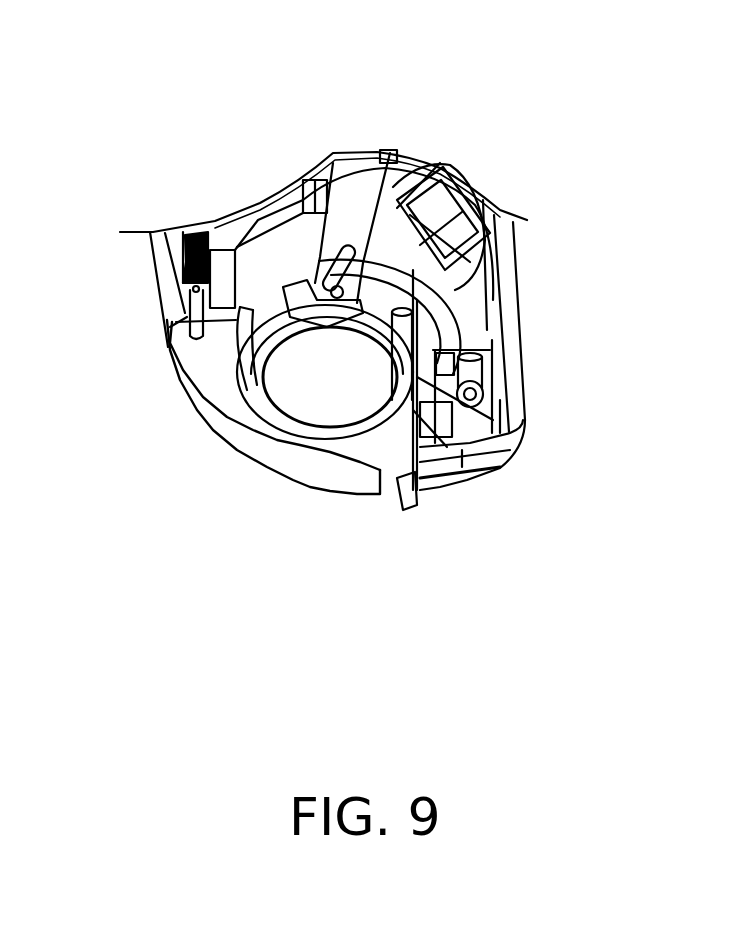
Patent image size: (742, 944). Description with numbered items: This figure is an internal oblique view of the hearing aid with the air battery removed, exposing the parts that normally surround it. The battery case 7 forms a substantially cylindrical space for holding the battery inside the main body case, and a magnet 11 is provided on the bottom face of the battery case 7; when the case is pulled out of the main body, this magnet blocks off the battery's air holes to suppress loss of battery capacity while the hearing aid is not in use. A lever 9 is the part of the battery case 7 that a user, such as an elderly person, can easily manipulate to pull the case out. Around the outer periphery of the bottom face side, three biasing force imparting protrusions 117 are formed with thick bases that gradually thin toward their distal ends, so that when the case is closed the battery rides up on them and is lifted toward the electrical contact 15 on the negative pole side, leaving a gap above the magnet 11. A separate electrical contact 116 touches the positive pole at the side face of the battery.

The battery case 7 is at (206, 431).
The lever 9 is at (405, 508).
The magnet 11 is at (337, 373).
The electrical contact 15 is at (352, 222).
The electrical contact 116 is at (483, 391).
The biasing force imparting protrusions 117 is at (410, 385).